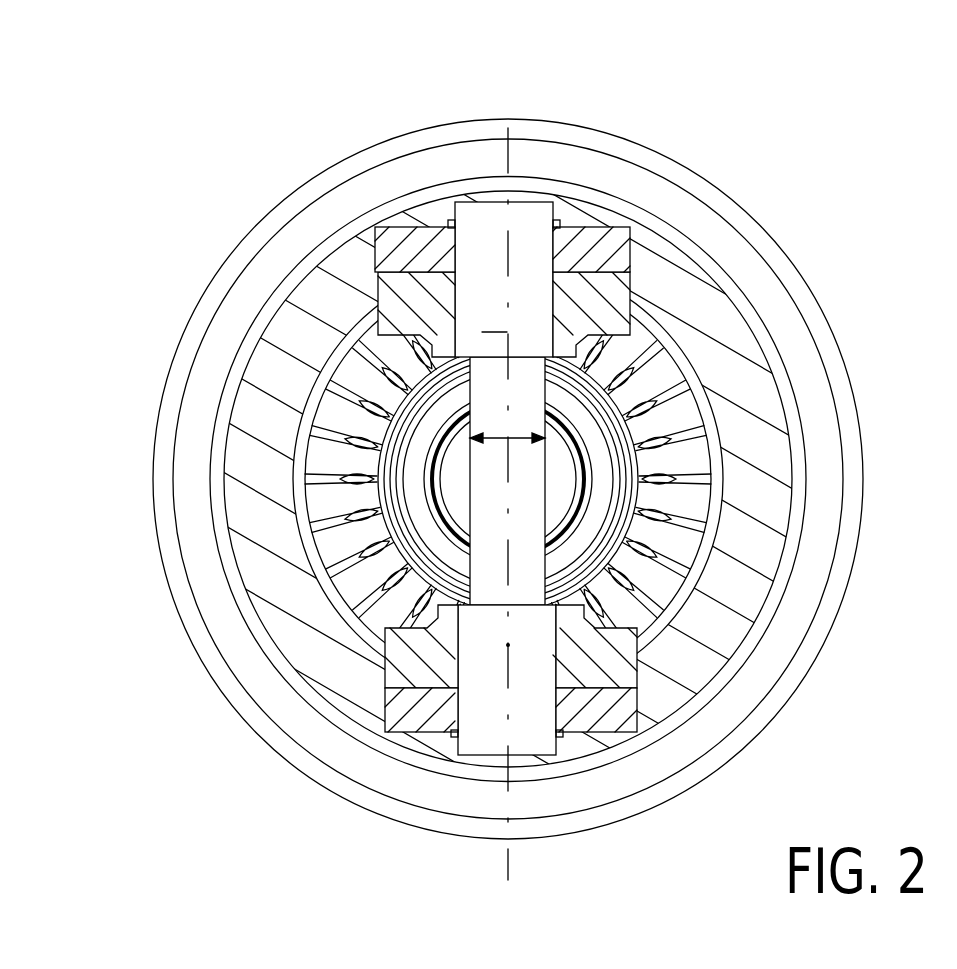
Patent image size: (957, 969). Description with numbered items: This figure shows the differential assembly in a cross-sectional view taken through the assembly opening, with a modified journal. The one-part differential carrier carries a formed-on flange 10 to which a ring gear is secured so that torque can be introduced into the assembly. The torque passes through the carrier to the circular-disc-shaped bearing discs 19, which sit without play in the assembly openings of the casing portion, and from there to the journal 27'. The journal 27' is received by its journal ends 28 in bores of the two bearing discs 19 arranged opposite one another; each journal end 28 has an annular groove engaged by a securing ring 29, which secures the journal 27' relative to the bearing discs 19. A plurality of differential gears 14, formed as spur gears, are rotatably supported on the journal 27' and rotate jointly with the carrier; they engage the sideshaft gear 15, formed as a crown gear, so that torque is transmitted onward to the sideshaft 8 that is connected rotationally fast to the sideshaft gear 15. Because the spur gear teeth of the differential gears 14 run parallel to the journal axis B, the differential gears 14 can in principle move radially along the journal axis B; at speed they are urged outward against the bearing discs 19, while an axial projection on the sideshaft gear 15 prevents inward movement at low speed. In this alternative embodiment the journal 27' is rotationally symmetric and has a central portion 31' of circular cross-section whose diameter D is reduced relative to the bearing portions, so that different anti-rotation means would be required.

The sideshaft 8 is at (562, 484).
The flange 10 is at (747, 263).
The differential gear 14 is at (608, 303).
The sideshaft gear 15 is at (650, 388).
The bearing disc 19 is at (605, 243).
The journal 27' is at (503, 313).
The journal end 28 is at (505, 240).
The securing ring 29 is at (448, 220).
The central portion 31' is at (507, 523).
The journal axis B is at (512, 725).
The diameter D is at (507, 417).